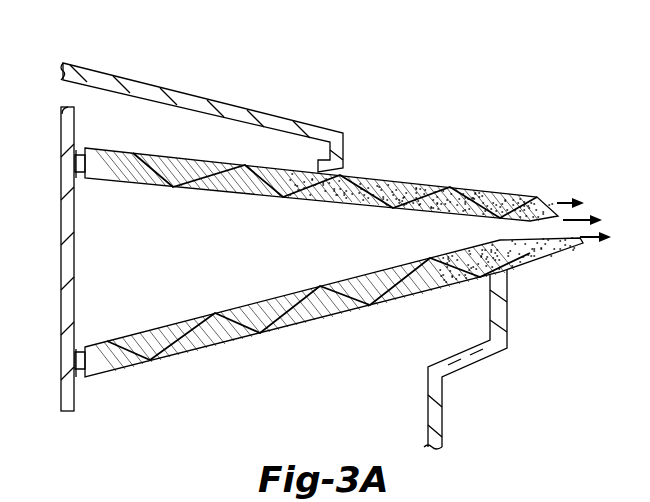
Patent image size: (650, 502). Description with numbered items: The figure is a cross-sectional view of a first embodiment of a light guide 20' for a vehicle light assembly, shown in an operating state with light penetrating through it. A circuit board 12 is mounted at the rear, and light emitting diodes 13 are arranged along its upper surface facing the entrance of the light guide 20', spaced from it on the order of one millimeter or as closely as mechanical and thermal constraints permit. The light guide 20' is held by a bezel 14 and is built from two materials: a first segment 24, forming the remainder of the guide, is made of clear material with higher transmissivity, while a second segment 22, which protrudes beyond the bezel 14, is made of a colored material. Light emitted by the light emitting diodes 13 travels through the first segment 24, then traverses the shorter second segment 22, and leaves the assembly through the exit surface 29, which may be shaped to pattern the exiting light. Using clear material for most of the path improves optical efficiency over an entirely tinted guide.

The circuit board 12 is at (61, 282).
The light emitting diodes 13 is at (75, 345).
The bezel 14 is at (248, 108).
The light guide 20' is at (329, 254).
The second segment 22 is at (400, 178).
The first segment 24 is at (333, 314).
The exit surface 29 is at (575, 213).